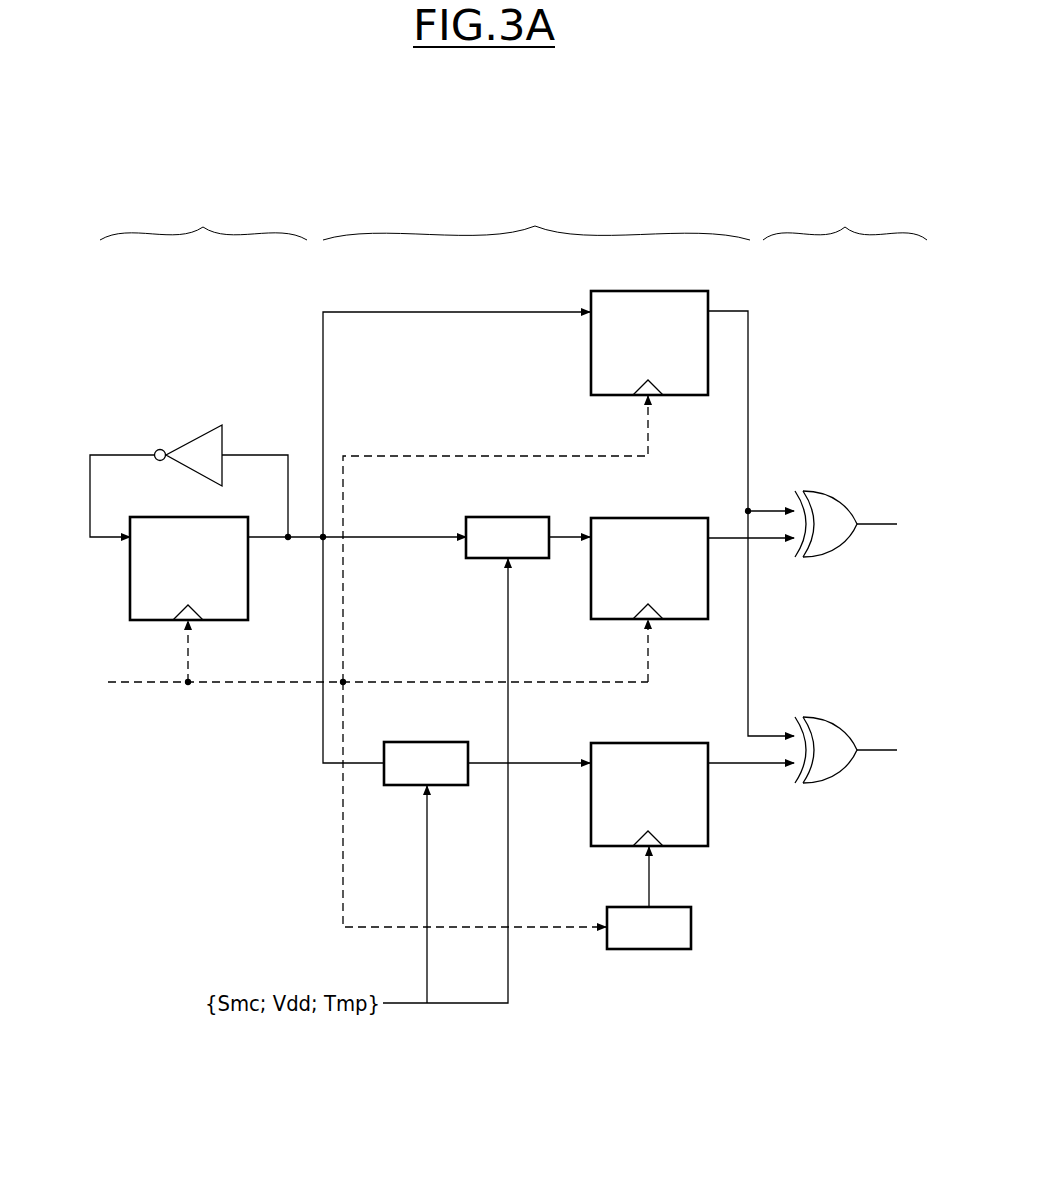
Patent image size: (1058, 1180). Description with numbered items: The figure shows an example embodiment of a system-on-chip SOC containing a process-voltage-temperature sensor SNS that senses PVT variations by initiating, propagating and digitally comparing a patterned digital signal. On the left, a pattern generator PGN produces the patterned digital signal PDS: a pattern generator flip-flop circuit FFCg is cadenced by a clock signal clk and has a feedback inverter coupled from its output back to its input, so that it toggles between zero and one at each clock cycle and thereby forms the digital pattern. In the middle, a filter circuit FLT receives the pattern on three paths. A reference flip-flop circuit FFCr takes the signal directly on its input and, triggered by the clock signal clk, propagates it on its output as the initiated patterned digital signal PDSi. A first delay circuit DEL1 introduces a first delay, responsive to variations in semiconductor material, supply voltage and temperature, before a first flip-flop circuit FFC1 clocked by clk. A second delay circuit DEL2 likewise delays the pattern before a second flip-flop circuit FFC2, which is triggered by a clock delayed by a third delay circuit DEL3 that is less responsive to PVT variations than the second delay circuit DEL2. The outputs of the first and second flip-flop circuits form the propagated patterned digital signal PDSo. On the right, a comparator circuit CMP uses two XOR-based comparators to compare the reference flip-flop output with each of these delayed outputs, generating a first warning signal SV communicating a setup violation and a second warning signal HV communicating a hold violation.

The system-on-chip SOC is at (82, 322).
The process-voltage-temperature sensor SNS is at (155, 370).
The pattern generator PGN is at (203, 220).
The filter circuit FLT is at (536, 219).
The comparator circuit CMP is at (845, 219).
The pattern generator flip-flop circuit FFCg is at (189, 568).
The reference flip-flop circuit FFCr is at (649, 343).
The first flip-flop circuit FFC1 is at (649, 568).
The second flip-flop circuit FFC2 is at (649, 794).
The first delay circuit DEL1 is at (528, 537).
The second delay circuit DEL2 is at (487, 763).
The third delay circuit DEL3 is at (649, 898).
The patterned digital signal PDS is at (287, 544).
The initiated patterned digital signal PDSi is at (742, 307).
The propagated patterned digital signal PDSo is at (723, 532).
The clock signal clk is at (361, 661).
The first warning signal SV is at (863, 524).
The second warning signal HV is at (864, 750).